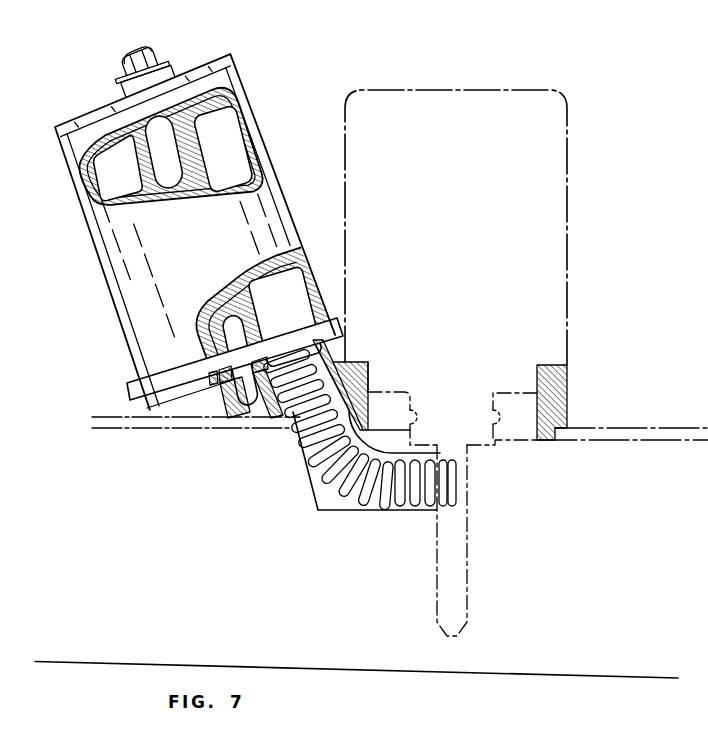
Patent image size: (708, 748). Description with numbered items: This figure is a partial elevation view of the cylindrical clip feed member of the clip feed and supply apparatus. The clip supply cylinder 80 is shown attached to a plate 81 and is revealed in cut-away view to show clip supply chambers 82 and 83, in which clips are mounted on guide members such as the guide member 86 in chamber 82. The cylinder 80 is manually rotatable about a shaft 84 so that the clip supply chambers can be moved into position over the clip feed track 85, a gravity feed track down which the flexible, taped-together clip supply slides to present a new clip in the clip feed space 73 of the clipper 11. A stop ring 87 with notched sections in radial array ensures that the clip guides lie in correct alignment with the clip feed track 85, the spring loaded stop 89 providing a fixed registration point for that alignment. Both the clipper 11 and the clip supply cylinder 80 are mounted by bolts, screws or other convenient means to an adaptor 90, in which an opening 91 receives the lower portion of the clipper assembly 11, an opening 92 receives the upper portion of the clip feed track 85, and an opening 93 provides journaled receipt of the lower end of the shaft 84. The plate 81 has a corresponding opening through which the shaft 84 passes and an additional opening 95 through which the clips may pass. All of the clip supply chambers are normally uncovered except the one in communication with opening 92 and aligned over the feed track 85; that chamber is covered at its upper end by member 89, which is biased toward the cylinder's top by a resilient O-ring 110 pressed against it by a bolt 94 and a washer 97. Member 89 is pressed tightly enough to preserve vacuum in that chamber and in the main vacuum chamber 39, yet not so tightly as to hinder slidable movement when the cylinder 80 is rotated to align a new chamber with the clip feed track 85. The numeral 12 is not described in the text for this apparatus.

The clipper 11 is at (461, 219).
The base plate 12 is at (634, 437).
The vacuum chamber 39 is at (218, 554).
The clip feed space 73 is at (463, 534).
The cylinder 80 is at (122, 282).
The plate 81 is at (162, 400).
The clip supply chamber 82 is at (246, 122).
The clip supply chamber 83 is at (79, 180).
The shaft 84 is at (210, 346).
The clip feed track 85 is at (324, 493).
The guide member 86 is at (235, 156).
The stop ring 87 is at (157, 383).
The spring loaded stop 89 is at (233, 55).
The adaptor 90 is at (228, 410).
The opening 91 is at (526, 419).
The opening 92 is at (322, 434).
The opening 93 is at (270, 417).
The bolt 94 is at (137, 55).
The opening 95 is at (284, 412).
The washer 97 is at (160, 58).
The O-ring 110 is at (115, 80).